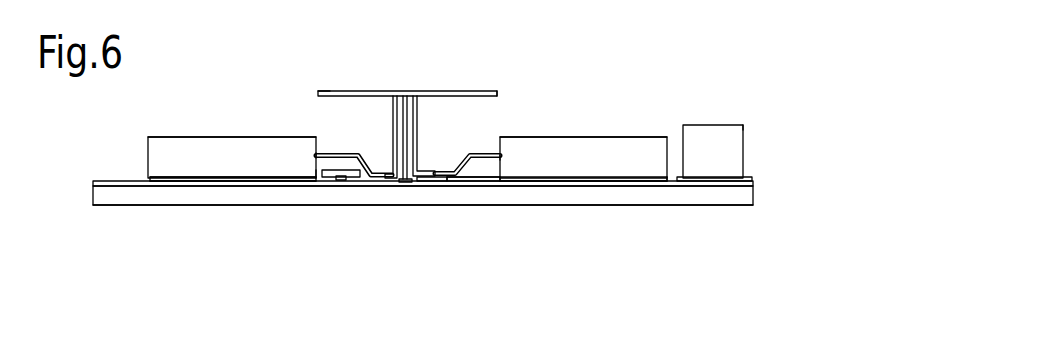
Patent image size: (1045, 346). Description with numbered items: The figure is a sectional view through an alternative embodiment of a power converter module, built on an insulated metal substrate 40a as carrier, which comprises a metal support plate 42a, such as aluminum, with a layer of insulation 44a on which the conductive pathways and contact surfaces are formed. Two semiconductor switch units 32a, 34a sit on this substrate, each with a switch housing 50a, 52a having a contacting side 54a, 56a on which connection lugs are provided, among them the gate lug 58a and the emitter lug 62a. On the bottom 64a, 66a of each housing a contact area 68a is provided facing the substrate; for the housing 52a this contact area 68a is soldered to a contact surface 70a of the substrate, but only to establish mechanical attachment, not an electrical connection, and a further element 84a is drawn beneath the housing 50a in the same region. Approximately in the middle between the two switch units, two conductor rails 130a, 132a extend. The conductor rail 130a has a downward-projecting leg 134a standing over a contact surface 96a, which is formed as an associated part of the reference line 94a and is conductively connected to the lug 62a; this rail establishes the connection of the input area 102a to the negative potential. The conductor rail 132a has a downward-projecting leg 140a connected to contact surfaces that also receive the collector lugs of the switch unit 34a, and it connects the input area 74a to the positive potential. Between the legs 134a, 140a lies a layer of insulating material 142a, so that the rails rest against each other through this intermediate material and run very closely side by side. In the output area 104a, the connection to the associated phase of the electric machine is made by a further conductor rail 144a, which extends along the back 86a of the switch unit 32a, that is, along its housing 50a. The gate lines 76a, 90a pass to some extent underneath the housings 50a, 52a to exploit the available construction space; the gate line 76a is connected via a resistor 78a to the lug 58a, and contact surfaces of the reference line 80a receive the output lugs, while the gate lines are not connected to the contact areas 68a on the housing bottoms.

The semiconductor switch unit 32a is at (602, 137).
The semiconductor switch unit 34a is at (180, 136).
The insulated metal substrate 40a is at (605, 206).
The support plate 42a is at (727, 200).
The layer of insulation 44a is at (110, 179).
The switch housing 50a is at (662, 138).
The switch housing 52a is at (222, 136).
The contacting side 54a is at (456, 162).
The contacting side 56a is at (316, 153).
The connection lug 58a is at (333, 157).
The connection lug 62a is at (468, 155).
The bottom of switch housing 64a is at (563, 182).
The bottom of switch housing 66a is at (232, 182).
The contact area 68a is at (152, 182).
The contact surface 70a is at (170, 182).
The input area 74a is at (323, 82).
The gate line 76a is at (317, 182).
The resistor 78a is at (325, 170).
The reference line 80a is at (338, 182).
The lead foot of second component 84a is at (677, 182).
The back of semiconductor switch unit 86a is at (668, 159).
The gate line 90a is at (500, 182).
The reference line 94a is at (465, 182).
The contact surface 96a is at (428, 182).
The input area 102a is at (510, 75).
The output area 104a is at (767, 144).
The conductor rail 130a is at (407, 112).
The conductor rail 132a is at (350, 91).
The downward-projecting leg 134a is at (413, 132).
The downward-projecting leg 140a is at (393, 124).
The layer of insulating material 142a is at (405, 91).
The conductor rail 144a is at (733, 130).